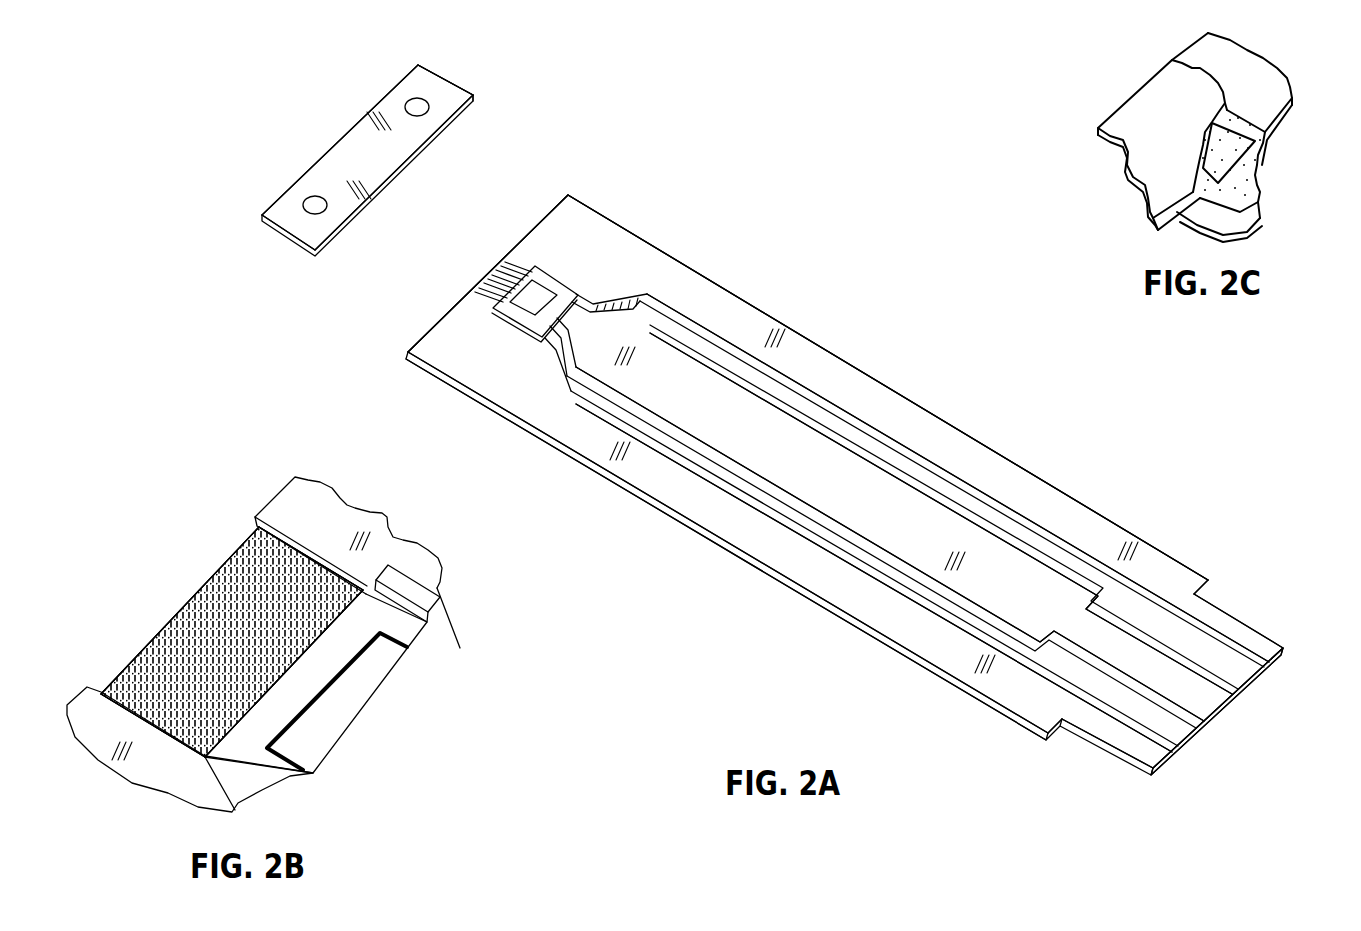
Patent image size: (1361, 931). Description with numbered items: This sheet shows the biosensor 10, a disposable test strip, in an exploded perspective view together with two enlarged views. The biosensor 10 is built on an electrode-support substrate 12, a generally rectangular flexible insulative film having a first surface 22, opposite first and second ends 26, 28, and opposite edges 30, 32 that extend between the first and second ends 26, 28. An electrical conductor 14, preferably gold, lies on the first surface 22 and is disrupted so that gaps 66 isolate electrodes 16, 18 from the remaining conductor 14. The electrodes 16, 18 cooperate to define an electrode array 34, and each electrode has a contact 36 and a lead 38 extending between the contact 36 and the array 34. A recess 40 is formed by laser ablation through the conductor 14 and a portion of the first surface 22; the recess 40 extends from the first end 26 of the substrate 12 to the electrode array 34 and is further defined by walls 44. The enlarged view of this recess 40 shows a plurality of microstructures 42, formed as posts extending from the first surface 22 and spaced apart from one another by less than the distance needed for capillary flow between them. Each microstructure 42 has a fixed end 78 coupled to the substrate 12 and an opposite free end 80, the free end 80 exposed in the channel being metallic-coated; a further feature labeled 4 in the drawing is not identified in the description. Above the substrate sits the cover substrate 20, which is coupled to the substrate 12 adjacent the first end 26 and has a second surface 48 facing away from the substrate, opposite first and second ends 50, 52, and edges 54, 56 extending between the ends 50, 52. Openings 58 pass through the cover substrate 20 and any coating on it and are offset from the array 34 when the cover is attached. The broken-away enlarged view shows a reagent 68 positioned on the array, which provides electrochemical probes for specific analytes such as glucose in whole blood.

In FIG. 2B, the contact area 4 is at (125, 650).
In FIG. 2A, the biosensor 10 is at (1105, 478).
In FIG. 2A, the electrode-support substrate 12 is at (738, 552).
In FIG. 2A, the electrical conductor 14 is at (720, 305).
In FIG. 2B, the electrical conductor 14 is at (384, 552).
In FIG. 2A, the electrode 16 is at (918, 587).
In FIG. 2A, the electrode 18 is at (885, 447).
In FIG. 2A, the cover substrate 20 is at (287, 181).
In FIG. 2A, the first surface 22 is at (970, 634).
In FIG. 2A, the first end 26 is at (537, 228).
In FIG. 2A, the second end 28 is at (1167, 772).
In FIG. 2A, the edge 30 is at (600, 465).
In FIG. 2A, the edge 32 is at (775, 325).
In FIG. 2A, the electrode array 34 is at (565, 292).
In FIG. 2B, the electrode array 34 is at (410, 624).
In FIG. 2A, the contact 36 is at (1167, 633).
In FIG. 2A, the lead 38 is at (637, 297).
In FIG. 2A, the recess 40 is at (490, 272).
In FIG. 2B, the recess 40 is at (157, 607).
In FIG. 2B, the microstructures 42 is at (191, 590).
In FIG. 2B, the walls 44 is at (258, 528).
In FIG. 2A, the second surface 48 is at (388, 103).
In FIG. 2A, the first end 50 is at (330, 149).
In FIG. 2A, the second end 52 is at (340, 230).
In FIG. 2A, the edge 54 is at (260, 218).
In FIG. 2A, the edge 56 is at (470, 96).
In FIG. 2A, the openings 58 is at (422, 103).
In FIG. 2A, the gaps 66 is at (783, 370).
In FIG. 2B, the gaps 66 is at (410, 590).
In FIG. 2C, the reagent 68 is at (1233, 176).
In FIG. 2B, the fixed end 78 is at (280, 683).
In FIG. 2B, the free end 80 is at (222, 570).